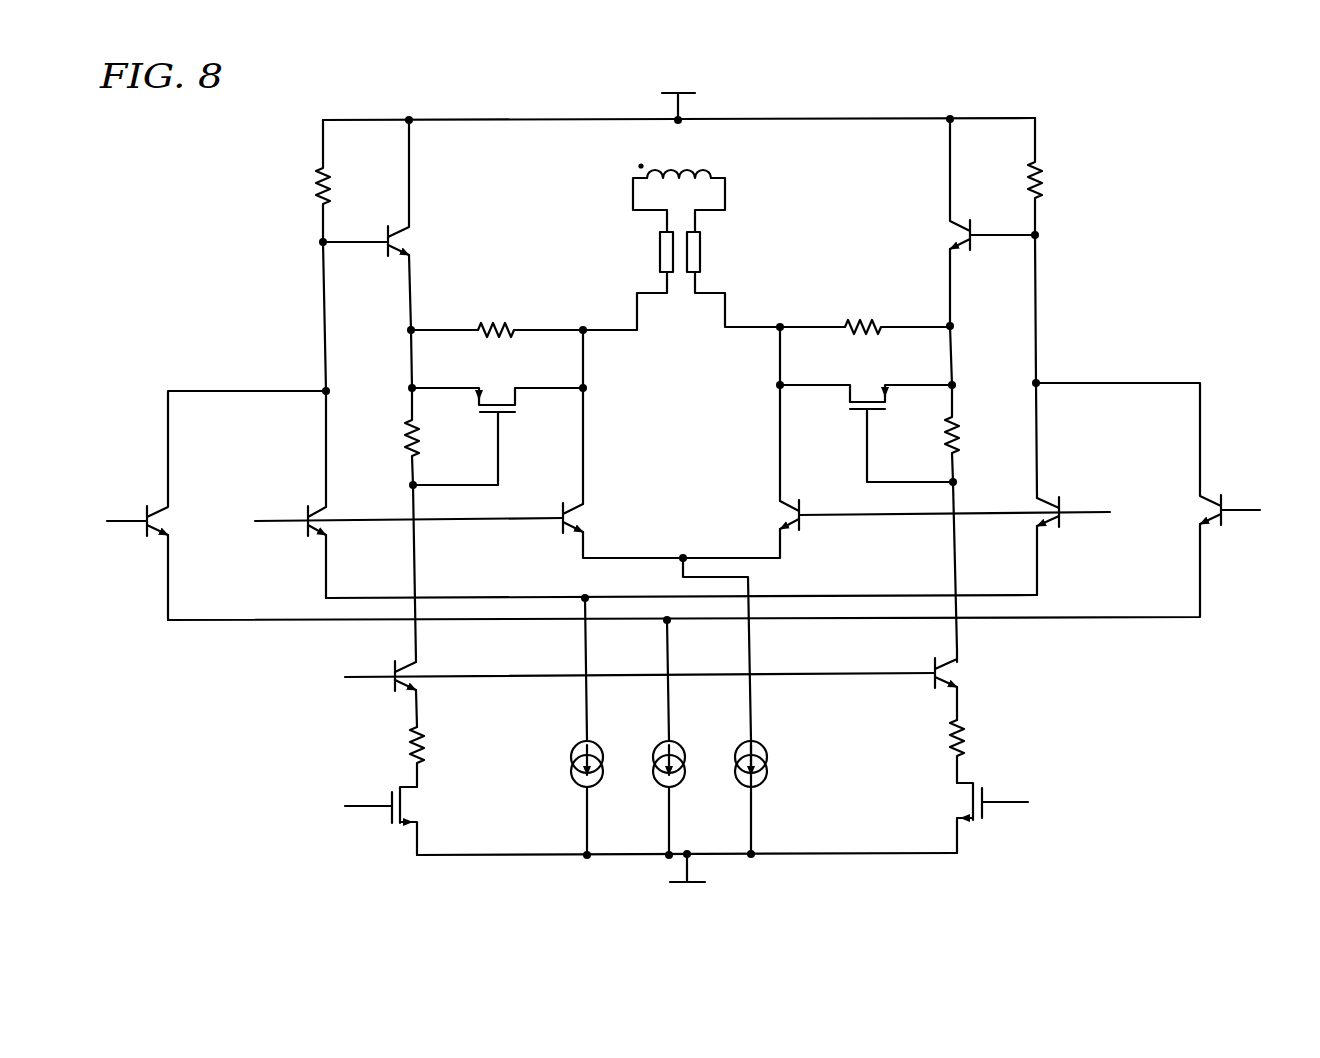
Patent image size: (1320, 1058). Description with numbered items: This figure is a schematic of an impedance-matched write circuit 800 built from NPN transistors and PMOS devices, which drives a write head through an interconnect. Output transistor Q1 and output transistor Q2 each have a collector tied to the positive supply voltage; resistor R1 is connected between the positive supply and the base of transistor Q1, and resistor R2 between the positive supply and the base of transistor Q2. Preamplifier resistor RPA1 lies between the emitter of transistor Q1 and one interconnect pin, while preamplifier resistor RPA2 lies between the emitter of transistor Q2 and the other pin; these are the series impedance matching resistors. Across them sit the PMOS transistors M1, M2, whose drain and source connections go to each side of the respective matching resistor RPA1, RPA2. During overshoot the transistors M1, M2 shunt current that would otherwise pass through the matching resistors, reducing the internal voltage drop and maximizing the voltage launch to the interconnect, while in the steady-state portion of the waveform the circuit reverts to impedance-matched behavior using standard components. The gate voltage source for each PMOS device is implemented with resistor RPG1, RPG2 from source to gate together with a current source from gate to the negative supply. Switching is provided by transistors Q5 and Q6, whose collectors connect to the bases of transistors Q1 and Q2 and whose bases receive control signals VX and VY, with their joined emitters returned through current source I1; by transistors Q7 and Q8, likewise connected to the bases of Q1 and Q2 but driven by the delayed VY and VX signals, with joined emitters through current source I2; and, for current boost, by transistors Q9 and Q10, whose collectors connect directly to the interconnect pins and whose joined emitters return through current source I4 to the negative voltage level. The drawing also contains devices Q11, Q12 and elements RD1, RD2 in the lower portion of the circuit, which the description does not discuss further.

The impedance-matched write circuit 800 is at (207, 153).
The resistor R1 is at (306, 181).
The resistor R2 is at (1051, 176).
The transistor Q1 is at (381, 225).
The transistor Q2 is at (980, 222).
The transistor Q5 is at (409, 543).
The transistor Q6 is at (1033, 536).
The transistor Q7 is at (216, 505).
The transistor Q8 is at (1148, 455).
The transistor Q9 is at (623, 529).
The transistor Q10 is at (896, 526).
The transistor Q11 is at (640, 686).
The transistor Q12 is at (965, 685).
The preamplifier resistor RPA1 is at (497, 310).
The preamplifier resistor RPA2 is at (865, 307).
The resistor RPG1 is at (389, 407).
The resistor RPG2 is at (975, 404).
The resistor RD1 is at (397, 754).
The resistor RD2 is at (937, 750).
The PMOS transistor M1 is at (497, 421).
The PMOS transistor M2 is at (866, 418).
The current source I1 is at (600, 726).
The current source I2 is at (682, 737).
The current source I4 is at (763, 797).